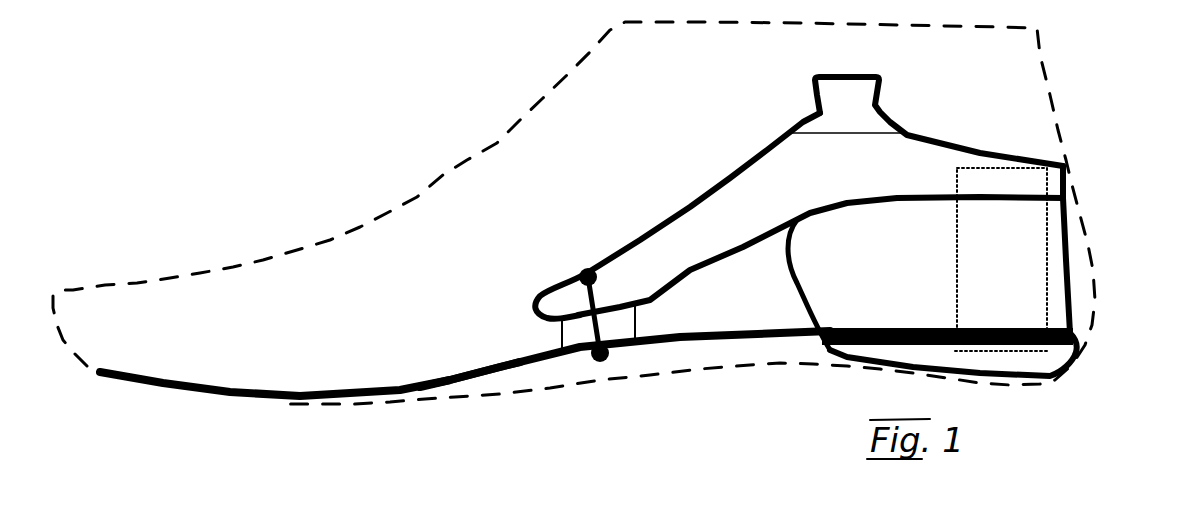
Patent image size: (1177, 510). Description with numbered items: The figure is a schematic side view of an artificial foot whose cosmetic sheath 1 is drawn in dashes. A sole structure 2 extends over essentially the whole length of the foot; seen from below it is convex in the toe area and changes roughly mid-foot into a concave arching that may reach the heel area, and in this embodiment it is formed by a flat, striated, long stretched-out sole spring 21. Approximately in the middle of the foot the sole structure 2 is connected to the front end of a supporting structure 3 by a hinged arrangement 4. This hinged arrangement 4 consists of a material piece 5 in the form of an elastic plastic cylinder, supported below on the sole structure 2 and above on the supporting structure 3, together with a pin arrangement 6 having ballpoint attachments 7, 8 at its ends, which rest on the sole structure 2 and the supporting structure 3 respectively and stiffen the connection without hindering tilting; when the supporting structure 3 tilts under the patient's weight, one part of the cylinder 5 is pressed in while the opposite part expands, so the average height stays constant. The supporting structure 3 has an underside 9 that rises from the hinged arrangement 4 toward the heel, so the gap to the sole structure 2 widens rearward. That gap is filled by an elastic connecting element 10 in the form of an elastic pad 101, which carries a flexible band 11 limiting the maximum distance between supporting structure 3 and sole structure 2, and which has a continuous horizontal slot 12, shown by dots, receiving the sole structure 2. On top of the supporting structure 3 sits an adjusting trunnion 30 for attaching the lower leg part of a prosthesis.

The cosmetic sheath 1 is at (443, 173).
The sole structure 2 is at (384, 381).
The sole spring 21 is at (475, 378).
The supporting structure 3 is at (693, 200).
The hinged arrangement 4 is at (647, 322).
The material piece 5 is at (570, 328).
The pin arrangement 6 is at (588, 295).
The ballpoint attachment 7 is at (595, 360).
The ballpoint attachment 8 is at (583, 270).
The underside 9 is at (749, 261).
The elastic connecting element 10 is at (905, 277).
The elastic pad 101 is at (1060, 272).
The flexible band 11 is at (1047, 232).
The horizontal slot 12 is at (843, 343).
The adjusting trunnion 30 is at (877, 90).